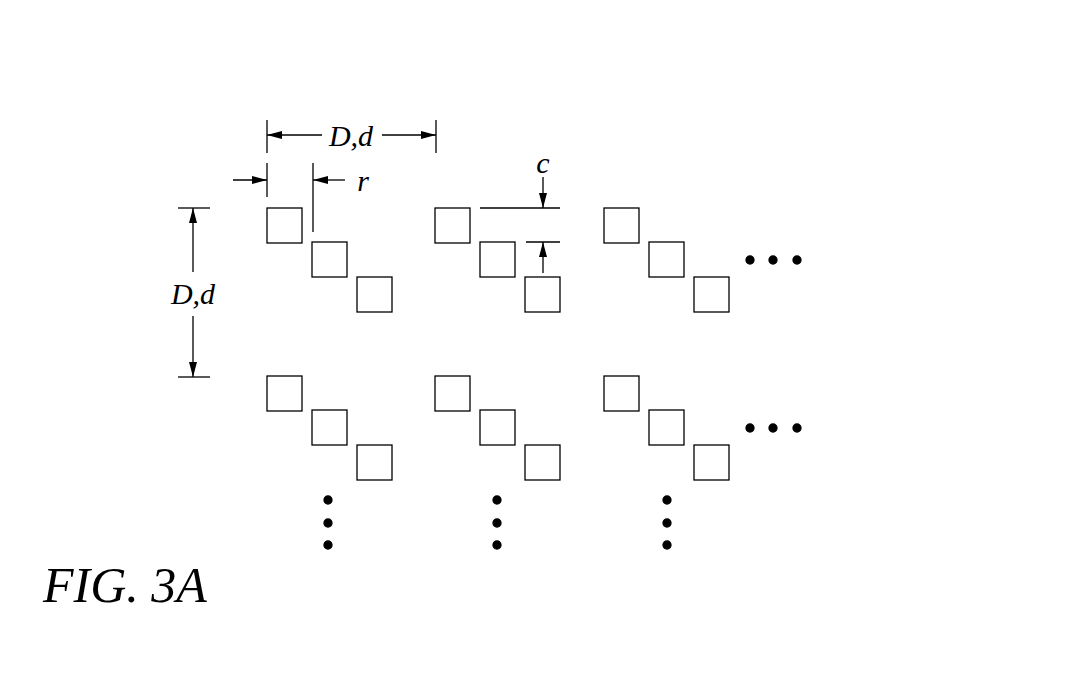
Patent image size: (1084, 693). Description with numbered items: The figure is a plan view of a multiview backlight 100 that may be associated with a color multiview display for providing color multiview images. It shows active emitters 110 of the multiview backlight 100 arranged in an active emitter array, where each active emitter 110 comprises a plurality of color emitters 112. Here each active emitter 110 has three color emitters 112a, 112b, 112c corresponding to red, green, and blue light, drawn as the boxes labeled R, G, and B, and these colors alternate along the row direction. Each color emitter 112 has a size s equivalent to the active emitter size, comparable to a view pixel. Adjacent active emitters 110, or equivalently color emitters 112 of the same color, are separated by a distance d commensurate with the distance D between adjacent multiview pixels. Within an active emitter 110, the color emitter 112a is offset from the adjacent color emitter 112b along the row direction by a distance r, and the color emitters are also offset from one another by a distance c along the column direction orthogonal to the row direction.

The multiview backlight 100 is at (828, 68).
The active emitter 110 is at (727, 146).
The color emitter 112 is at (577, 326).
The color emitter 112a is at (622, 208).
The color emitter 112b is at (668, 242).
The color emitter 112c is at (713, 277).